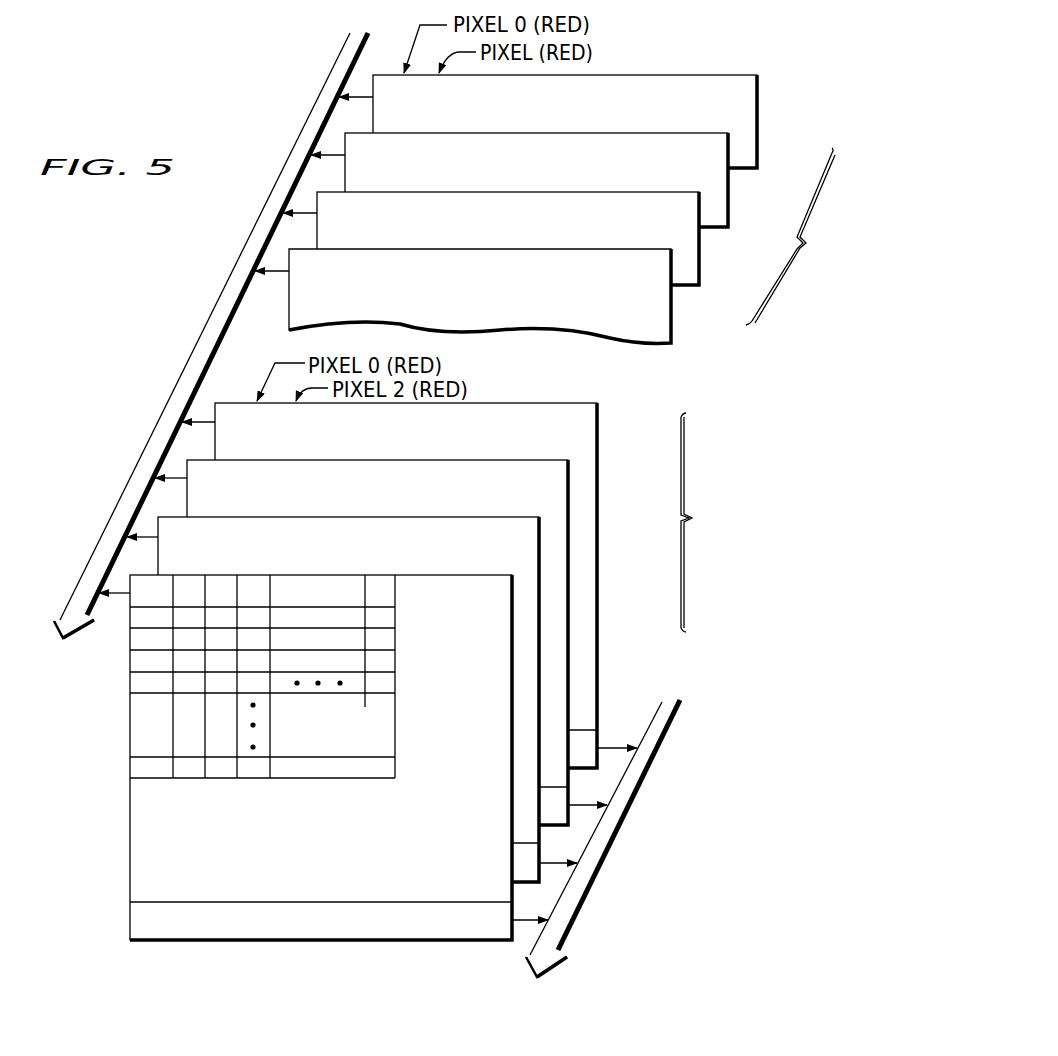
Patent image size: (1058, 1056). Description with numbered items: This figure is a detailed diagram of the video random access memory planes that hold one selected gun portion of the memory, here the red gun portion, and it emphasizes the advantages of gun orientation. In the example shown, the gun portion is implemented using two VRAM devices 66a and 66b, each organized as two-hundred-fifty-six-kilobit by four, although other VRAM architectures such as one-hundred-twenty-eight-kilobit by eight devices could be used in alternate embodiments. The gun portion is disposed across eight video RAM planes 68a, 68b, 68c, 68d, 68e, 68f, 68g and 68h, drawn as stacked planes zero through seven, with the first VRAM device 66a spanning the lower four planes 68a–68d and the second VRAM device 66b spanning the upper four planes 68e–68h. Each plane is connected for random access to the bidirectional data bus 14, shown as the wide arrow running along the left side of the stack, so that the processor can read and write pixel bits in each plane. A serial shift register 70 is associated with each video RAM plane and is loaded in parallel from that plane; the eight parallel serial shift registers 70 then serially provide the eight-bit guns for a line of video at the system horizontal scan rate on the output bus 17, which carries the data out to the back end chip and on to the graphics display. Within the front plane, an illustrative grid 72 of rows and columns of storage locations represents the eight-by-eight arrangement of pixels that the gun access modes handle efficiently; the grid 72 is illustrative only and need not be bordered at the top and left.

The data bus 14 is at (200, 340).
The bus 17 is at (640, 788).
The VRAM device 66a is at (708, 522).
The VRAM device 66b is at (795, 236).
The video RAM plane 68a is at (512, 590).
The video RAM plane 68b is at (539, 533).
The video RAM plane 68c is at (568, 473).
The video RAM plane 68d is at (597, 420).
The video RAM plane 68e is at (671, 310).
The video RAM plane 68f is at (699, 253).
The video RAM plane 68g is at (728, 195).
The video RAM plane 68h is at (757, 160).
The serial shift register 70 is at (130, 918).
The grid 72 is at (130, 767).